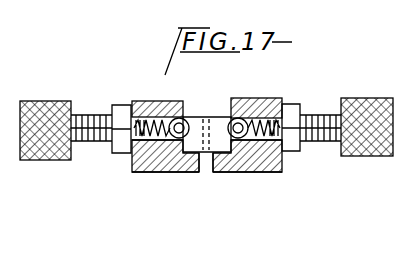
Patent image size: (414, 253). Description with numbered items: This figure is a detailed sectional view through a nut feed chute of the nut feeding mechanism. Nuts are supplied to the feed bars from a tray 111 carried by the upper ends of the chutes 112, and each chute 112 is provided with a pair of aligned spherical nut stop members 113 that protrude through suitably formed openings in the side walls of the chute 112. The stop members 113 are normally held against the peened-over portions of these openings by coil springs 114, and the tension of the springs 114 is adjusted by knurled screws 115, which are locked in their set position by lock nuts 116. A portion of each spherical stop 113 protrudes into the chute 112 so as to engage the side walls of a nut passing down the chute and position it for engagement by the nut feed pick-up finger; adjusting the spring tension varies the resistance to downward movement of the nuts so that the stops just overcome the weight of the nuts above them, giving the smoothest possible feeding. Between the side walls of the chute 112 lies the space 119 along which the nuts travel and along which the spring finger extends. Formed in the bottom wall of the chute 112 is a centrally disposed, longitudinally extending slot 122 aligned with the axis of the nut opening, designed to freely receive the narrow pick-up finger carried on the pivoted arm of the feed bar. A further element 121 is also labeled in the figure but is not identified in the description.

The tray 111 is at (207, 126).
The chute 112 is at (284, 100).
The spherical nut stop member 113 is at (232, 118).
The coil spring 114 is at (151, 101).
The knurled screw 115 is at (47, 101).
The lock nut 116 is at (116, 106).
The space between side walls of chute 119 is at (163, 172).
The slot 121 is at (189, 172).
The longitudinally extending slot 122 is at (207, 172).